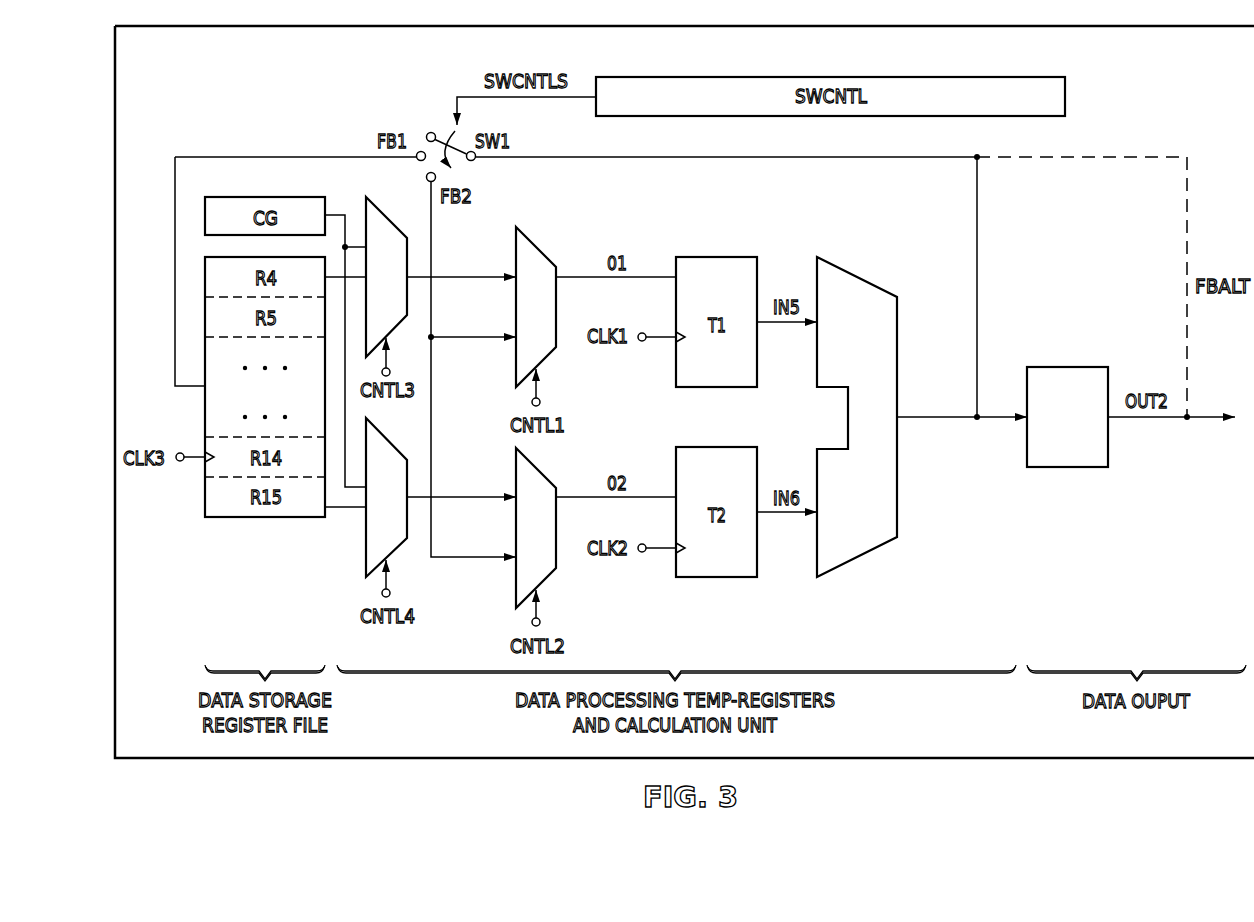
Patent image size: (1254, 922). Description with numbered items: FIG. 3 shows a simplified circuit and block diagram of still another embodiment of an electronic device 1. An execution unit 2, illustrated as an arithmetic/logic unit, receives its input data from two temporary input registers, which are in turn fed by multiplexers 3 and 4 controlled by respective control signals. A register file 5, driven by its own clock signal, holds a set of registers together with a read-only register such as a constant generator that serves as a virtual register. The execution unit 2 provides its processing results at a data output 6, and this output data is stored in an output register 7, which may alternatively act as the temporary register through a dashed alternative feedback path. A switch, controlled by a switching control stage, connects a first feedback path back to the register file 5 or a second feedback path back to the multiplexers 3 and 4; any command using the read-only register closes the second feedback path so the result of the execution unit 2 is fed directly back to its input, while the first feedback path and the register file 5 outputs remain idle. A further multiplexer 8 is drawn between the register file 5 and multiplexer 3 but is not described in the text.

The electronic device 1 is at (113, 185).
The execution unit 2 is at (866, 518).
The multiplexer 3 is at (544, 318).
The multiplexer 4 is at (544, 542).
The register file 5 is at (394, 510).
The data output 6 is at (942, 420).
The output register 7 is at (1065, 470).
The multiplexer 8 is at (394, 291).